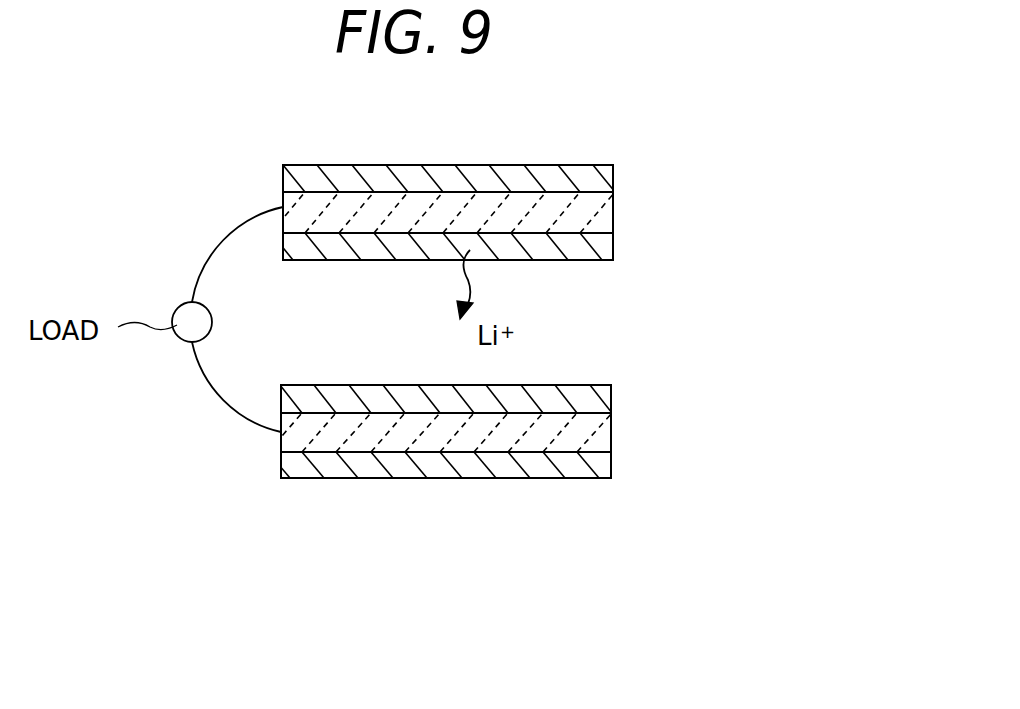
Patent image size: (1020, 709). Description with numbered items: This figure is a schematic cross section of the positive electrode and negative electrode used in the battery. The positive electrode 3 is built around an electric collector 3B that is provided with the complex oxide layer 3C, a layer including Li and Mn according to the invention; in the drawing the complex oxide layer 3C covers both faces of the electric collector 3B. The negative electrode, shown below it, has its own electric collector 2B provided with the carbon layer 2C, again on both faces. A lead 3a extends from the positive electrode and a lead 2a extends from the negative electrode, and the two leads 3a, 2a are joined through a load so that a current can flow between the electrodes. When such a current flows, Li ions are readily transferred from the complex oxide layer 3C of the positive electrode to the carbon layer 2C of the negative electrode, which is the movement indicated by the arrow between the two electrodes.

The positive electrode 3 is at (483, 178).
The complex oxide layer 3C is at (597, 183).
The electric collector 3B is at (603, 218).
The positive electrode lead 3a is at (220, 237).
The carbon layer 2C is at (597, 405).
The electric collector 2B is at (600, 438).
The negative electrode lead 2a is at (217, 410).